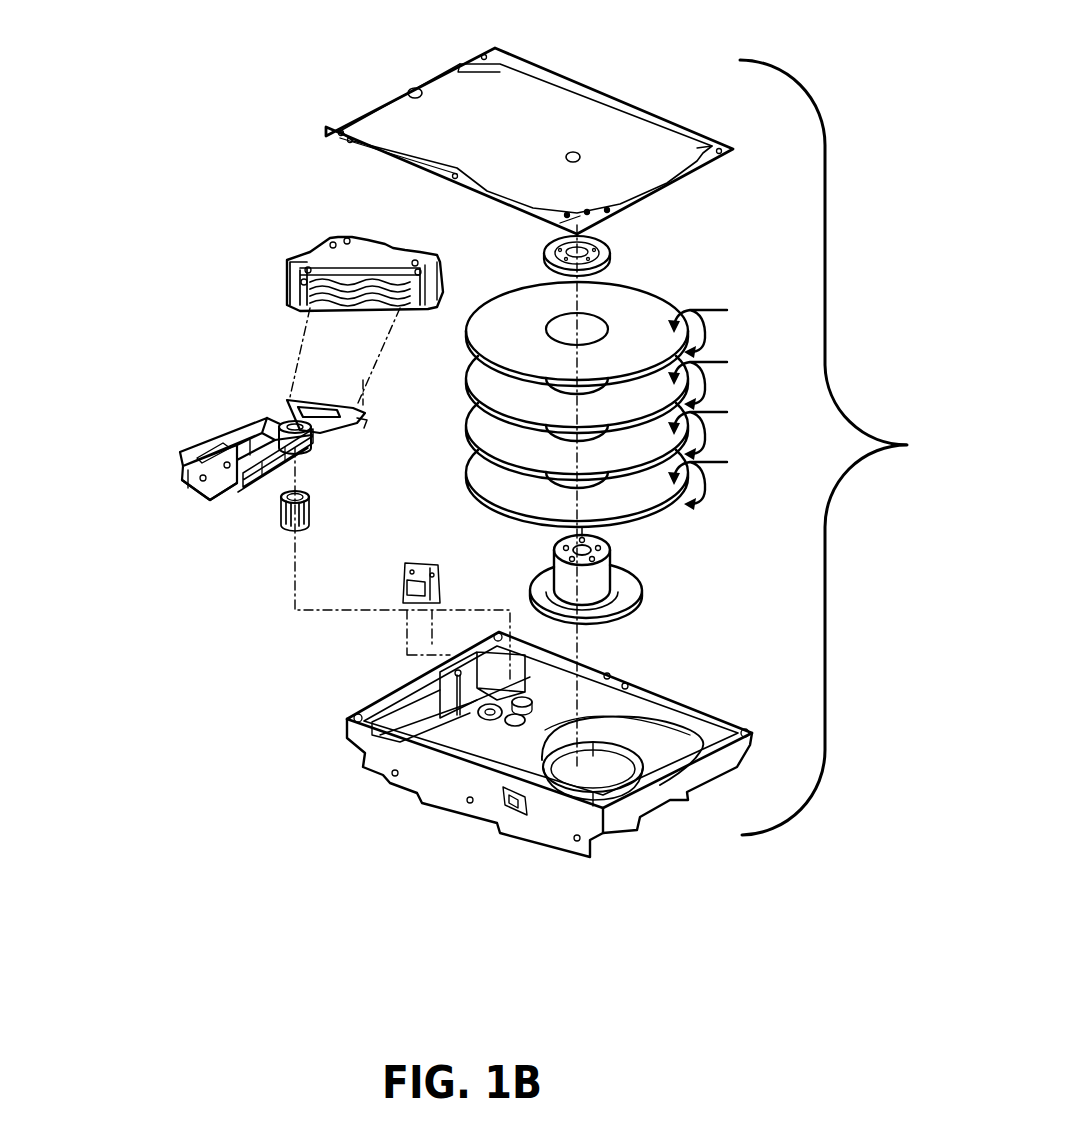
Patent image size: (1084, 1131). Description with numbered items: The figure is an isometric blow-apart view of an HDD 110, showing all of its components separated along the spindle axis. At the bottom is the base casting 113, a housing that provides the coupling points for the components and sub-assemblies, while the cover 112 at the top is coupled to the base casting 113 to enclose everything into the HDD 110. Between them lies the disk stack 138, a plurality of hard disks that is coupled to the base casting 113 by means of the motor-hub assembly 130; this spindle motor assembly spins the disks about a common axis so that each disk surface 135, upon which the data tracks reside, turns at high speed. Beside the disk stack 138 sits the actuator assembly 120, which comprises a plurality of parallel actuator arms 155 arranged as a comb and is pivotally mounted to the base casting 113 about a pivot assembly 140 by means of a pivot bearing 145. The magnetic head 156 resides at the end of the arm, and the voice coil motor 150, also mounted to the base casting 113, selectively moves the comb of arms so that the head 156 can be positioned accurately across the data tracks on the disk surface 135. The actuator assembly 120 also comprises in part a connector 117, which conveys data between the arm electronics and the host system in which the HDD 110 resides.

The HDD 110 is at (907, 445).
The cover 112 is at (533, 88).
The base casting 113 is at (362, 740).
The connector 117 is at (188, 452).
The actuator assembly 120 is at (207, 482).
The motor-hub assembly 130 is at (620, 597).
The disk surface 135 is at (727, 513).
The disk stack 138 is at (643, 375).
The pivot assembly 140 is at (280, 422).
The pivot bearing 145 is at (315, 514).
The voice coil motor 150 is at (278, 248).
The actuator arms 155 is at (277, 492).
The head 156 is at (232, 502).